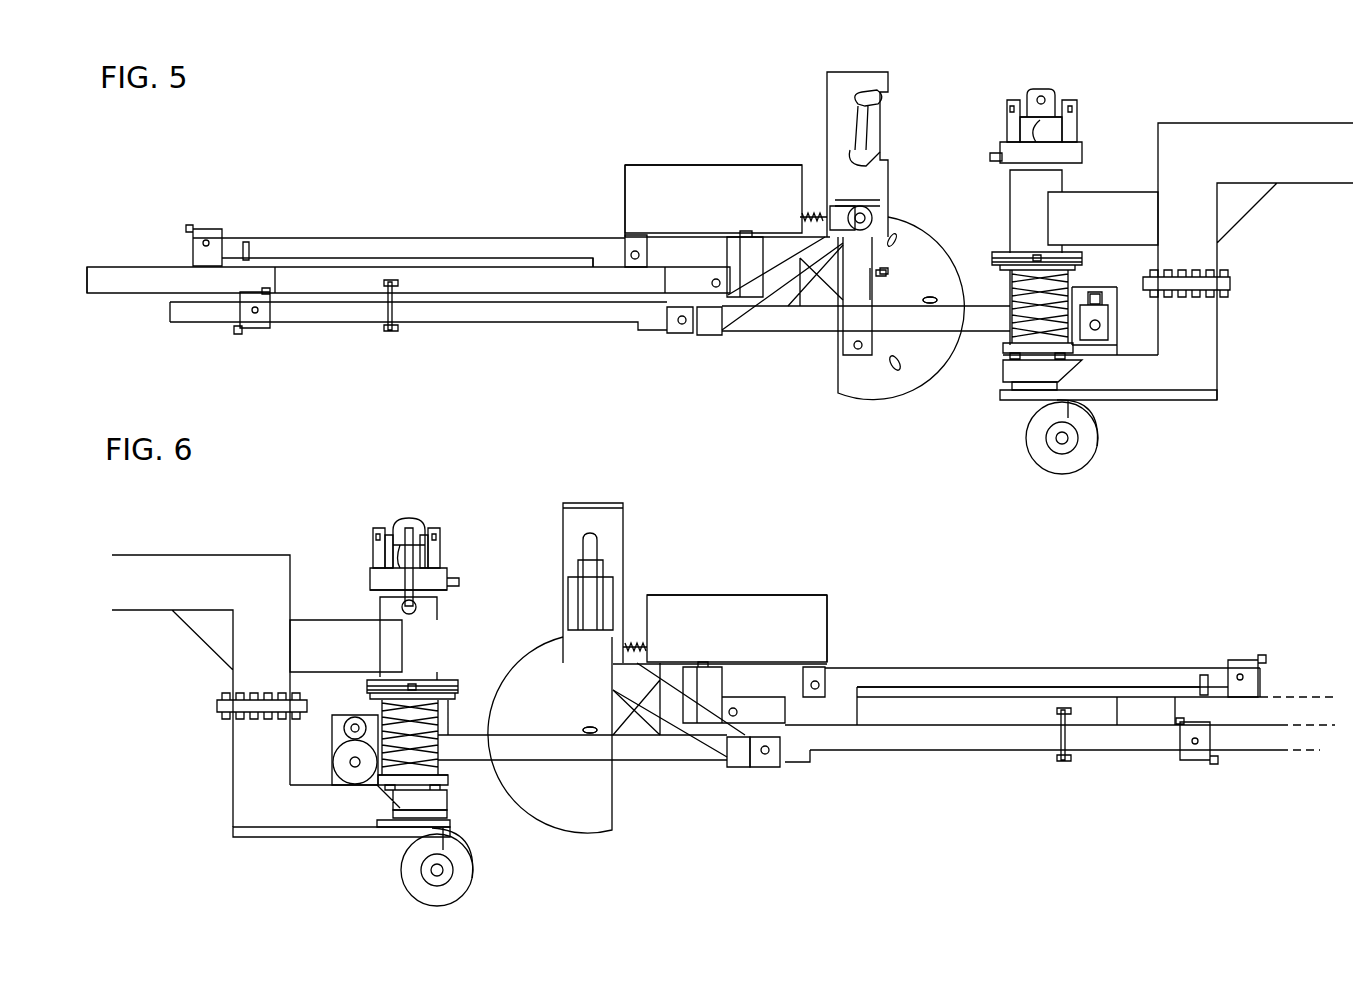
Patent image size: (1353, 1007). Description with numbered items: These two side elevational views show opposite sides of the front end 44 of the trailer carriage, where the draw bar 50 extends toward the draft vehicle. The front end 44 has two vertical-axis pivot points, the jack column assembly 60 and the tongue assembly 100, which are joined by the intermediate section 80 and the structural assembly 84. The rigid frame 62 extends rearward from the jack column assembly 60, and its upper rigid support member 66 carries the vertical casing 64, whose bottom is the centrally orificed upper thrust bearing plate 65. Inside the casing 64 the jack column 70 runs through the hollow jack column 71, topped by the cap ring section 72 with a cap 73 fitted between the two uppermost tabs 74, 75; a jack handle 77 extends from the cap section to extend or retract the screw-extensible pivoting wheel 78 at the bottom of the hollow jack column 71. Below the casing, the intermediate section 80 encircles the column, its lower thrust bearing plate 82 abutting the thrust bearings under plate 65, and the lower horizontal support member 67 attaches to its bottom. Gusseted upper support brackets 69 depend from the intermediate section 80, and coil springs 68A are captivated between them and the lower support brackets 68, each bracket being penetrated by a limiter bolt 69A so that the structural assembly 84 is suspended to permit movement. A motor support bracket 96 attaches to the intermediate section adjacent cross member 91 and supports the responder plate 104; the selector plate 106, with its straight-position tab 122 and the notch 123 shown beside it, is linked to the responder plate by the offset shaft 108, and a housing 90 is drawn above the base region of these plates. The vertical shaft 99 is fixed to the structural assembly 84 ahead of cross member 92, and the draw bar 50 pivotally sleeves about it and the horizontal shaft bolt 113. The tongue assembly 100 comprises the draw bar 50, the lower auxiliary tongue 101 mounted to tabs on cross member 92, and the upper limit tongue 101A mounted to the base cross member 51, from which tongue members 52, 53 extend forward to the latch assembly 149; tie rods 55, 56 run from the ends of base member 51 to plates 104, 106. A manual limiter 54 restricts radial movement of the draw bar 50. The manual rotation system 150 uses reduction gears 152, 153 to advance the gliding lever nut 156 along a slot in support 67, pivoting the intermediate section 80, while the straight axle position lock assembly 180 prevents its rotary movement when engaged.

In FIG. 5, the carriage front end 44 is at (645, 130).
In FIG. 6, the carriage front end 44 is at (808, 555).
In FIG. 5, the draw bar 50 is at (130, 248).
In FIG. 6, the draw bar 50 is at (1322, 672).
In FIG. 5, the base cross member 51 is at (615, 158).
In FIG. 6, the base cross member 51 is at (840, 598).
In FIG. 6, the tongue member 52 is at (990, 690).
In FIG. 5, the tongue member 53 is at (525, 248).
In FIG. 5, the manual limiter 54 is at (380, 330).
In FIG. 6, the manual limiter 54 is at (1065, 768).
In FIG. 5, the tie rod 55 is at (822, 212).
In FIG. 6, the tie rod 56 is at (633, 640).
In FIG. 6, the jack column assembly 60 is at (462, 650).
In FIG. 5, the rigid frame 62 is at (1265, 135).
In FIG. 6, the rigid frame 62 is at (180, 565).
In FIG. 5, the vertical casing 64 is at (1062, 180).
In FIG. 6, the vertical casing 64 is at (380, 605).
In FIG. 5, the upper thrust bearing plate 65 is at (1082, 255).
In FIG. 6, the upper thrust bearing plate 65 is at (375, 685).
In FIG. 5, the upper rigid support member 66 is at (1095, 205).
In FIG. 6, the upper rigid support member 66 is at (360, 625).
In FIG. 5, the lower horizontal support member 67 is at (1130, 378).
In FIG. 6, the lower horizontal support member 67 is at (328, 800).
In FIG. 5, the lower support bracket 68 is at (1005, 345).
In FIG. 6, the lower support bracket 68 is at (462, 780).
In FIG. 5, the coil spring 68A is at (1085, 352).
In FIG. 6, the coil spring 68A is at (345, 762).
In FIG. 5, the coil spring upper support bracket 69 is at (1085, 272).
In FIG. 6, the coil spring upper support bracket 69 is at (462, 695).
In FIG. 5, the coil spring limiter bolt 69A is at (1105, 312).
In FIG. 6, the coil spring limiter bolt 69A is at (470, 750).
In FIG. 5, the jack column 70 is at (1045, 85).
In FIG. 6, the jack column 70 is at (410, 514).
In FIG. 5, the hollow jack column 71 is at (1045, 120).
In FIG. 6, the hollow jack column 71 is at (395, 560).
In FIG. 5, the cap ring section 72 is at (990, 148).
In FIG. 6, the cap ring section 72 is at (470, 572).
In FIG. 5, the cap 73 is at (1012, 100).
In FIG. 6, the cap 73 is at (432, 525).
In FIG. 5, the uppermost tab 74 is at (1005, 110).
In FIG. 6, the uppermost tab 74 is at (447, 535).
In FIG. 5, the uppermost tab 75 is at (1070, 103).
In FIG. 6, the uppermost tab 75 is at (378, 530).
In FIG. 6, the jack handle 77 is at (418, 592).
In FIG. 5, the pivoting wheel 78 is at (1088, 452).
In FIG. 6, the pivoting wheel 78 is at (420, 872).
In FIG. 5, the intermediate section 80 is at (975, 342).
In FIG. 6, the intermediate section 80 is at (470, 775).
In FIG. 5, the lower thrust bearing plate 82 is at (998, 262).
In FIG. 6, the lower thrust bearing plate 82 is at (368, 712).
In FIG. 5, the structural assembly 84 is at (935, 325).
In FIG. 6, the structural assembly 84 is at (490, 745).
In FIG. 5, the housing 90 is at (746, 228).
In FIG. 6, the housing 90 is at (707, 670).
In FIG. 5, the cross member 91 is at (855, 328).
In FIG. 5, the cross member 92 is at (705, 322).
In FIG. 6, the cross member 92 is at (742, 747).
In FIG. 5, the motor support bracket 96 is at (870, 165).
In FIG. 6, the motor support bracket 96 is at (636, 699).
In FIG. 5, the vertical shaft 99 is at (748, 292).
In FIG. 6, the vertical shaft 99 is at (706, 718).
In FIG. 5, the tongue assembly 100 is at (383, 228).
In FIG. 6, the tongue assembly 100 is at (1070, 652).
In FIG. 5, the lower auxiliary tongue 101 is at (540, 327).
In FIG. 6, the lower auxiliary tongue 101 is at (900, 755).
In FIG. 5, the upper limit tongue 101A is at (478, 240).
In FIG. 6, the upper limit tongue 101A is at (935, 665).
In FIG. 5, the responder plate 104 is at (855, 70).
In FIG. 6, the responder plate 104 is at (597, 500).
In FIG. 5, the selector plate 106 is at (880, 396).
In FIG. 6, the selector plate 106 is at (568, 832).
In FIG. 5, the offset shaft 108 is at (865, 125).
In FIG. 6, the offset shaft 108 is at (584, 547).
In FIG. 5, the horizontal shaft bolt 113 is at (776, 248).
In FIG. 6, the horizontal shaft bolt 113 is at (702, 680).
In FIG. 5, the tab 122 is at (892, 246).
In FIG. 5, the slot 123 is at (893, 230).
In FIG. 5, the latch assembly 149 is at (222, 232).
In FIG. 6, the latch assembly 149 is at (1240, 660).
In FIG. 5, the manual rotation system 150 is at (1125, 340).
In FIG. 6, the manual rotation system 150 is at (312, 798).
In FIG. 6, the reduction gear 152 is at (340, 770).
In FIG. 6, the reduction gear 153 is at (344, 730).
In FIG. 5, the gliding lever nut 156 is at (1120, 318).
In FIG. 5, the straight axle position lock assembly 180 is at (1027, 385).
In FIG. 6, the straight axle position lock assembly 180 is at (385, 812).